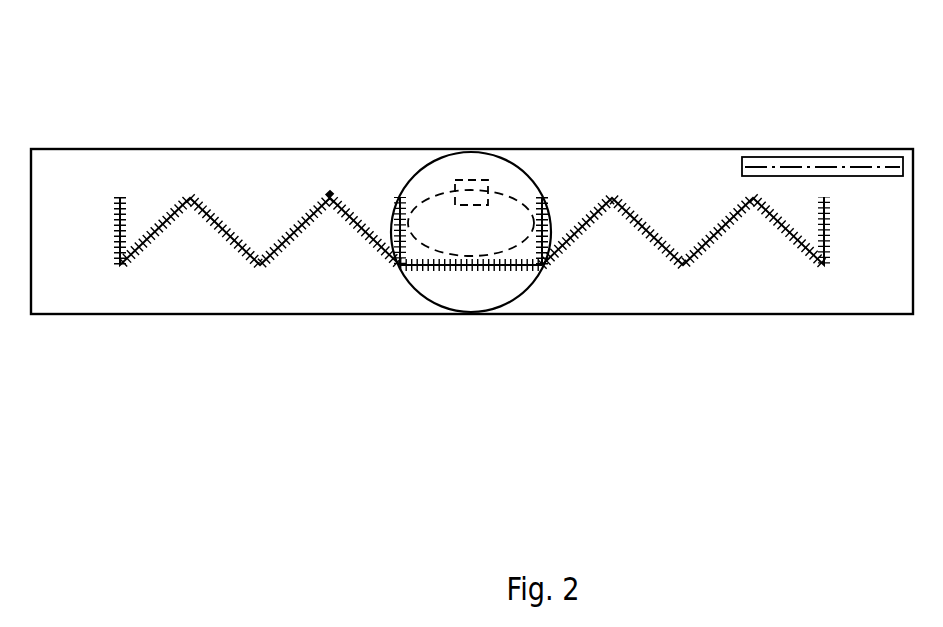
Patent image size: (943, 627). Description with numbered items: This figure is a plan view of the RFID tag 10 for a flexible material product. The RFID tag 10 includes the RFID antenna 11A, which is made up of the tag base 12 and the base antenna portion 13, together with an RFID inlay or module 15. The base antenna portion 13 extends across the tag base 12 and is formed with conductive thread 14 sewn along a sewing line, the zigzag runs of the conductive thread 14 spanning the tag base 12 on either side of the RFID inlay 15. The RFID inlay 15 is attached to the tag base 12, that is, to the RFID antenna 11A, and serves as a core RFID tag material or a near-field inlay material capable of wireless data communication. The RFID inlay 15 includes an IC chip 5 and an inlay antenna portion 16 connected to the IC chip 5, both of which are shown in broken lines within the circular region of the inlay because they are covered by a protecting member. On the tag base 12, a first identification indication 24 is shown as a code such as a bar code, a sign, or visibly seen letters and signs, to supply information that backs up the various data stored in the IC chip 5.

The RFID tag 10 is at (726, 136).
The tag base 12 is at (847, 314).
The base antenna portion 13 is at (786, 243).
The conductive thread 14 is at (293, 245).
The RFID antenna 11A is at (873, 400).
The RFID inlay 15 is at (498, 152).
The inlay antenna portion 16 is at (510, 193).
The IC chip 5 is at (472, 180).
The first identification indication 24 is at (817, 157).